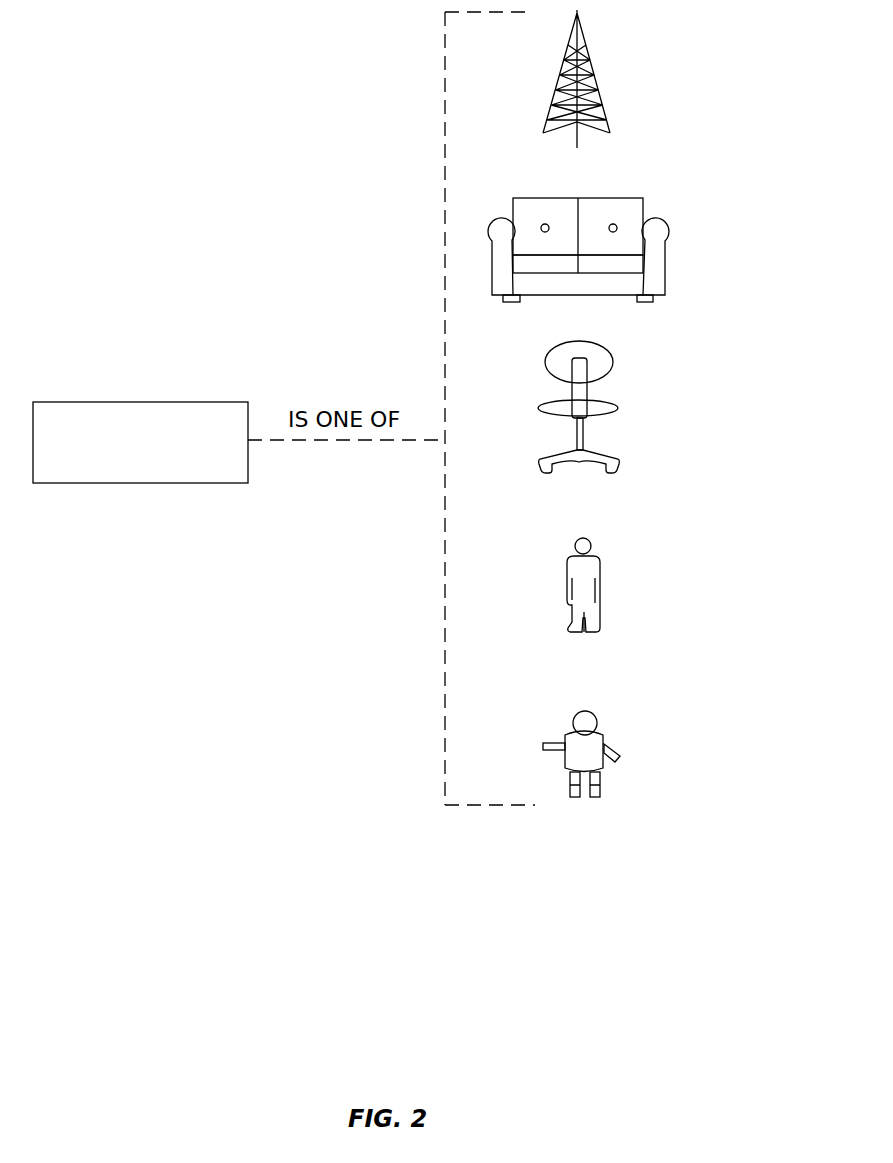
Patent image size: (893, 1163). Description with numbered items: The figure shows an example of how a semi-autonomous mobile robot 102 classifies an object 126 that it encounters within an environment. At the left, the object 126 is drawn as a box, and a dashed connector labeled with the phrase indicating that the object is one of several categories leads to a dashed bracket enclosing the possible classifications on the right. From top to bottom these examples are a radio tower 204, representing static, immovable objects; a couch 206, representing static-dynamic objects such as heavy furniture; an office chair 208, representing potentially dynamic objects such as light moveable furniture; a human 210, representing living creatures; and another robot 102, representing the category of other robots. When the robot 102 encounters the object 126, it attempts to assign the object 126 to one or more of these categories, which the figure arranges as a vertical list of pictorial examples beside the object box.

The object 126 is at (150, 402).
The radio tower 204 is at (605, 72).
The couch 206 is at (665, 213).
The office chair 208 is at (624, 403).
The human 210 is at (608, 582).
The semi-autonomous mobile robot 102 is at (607, 720).